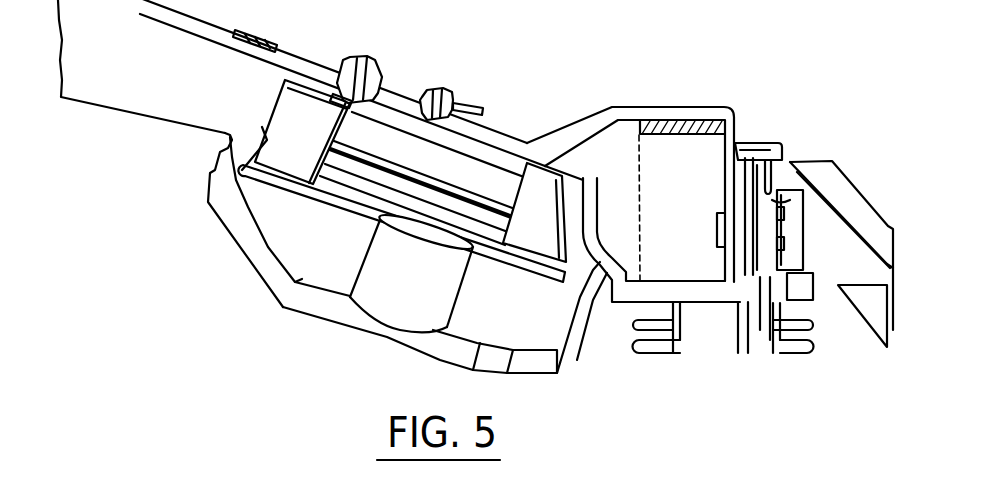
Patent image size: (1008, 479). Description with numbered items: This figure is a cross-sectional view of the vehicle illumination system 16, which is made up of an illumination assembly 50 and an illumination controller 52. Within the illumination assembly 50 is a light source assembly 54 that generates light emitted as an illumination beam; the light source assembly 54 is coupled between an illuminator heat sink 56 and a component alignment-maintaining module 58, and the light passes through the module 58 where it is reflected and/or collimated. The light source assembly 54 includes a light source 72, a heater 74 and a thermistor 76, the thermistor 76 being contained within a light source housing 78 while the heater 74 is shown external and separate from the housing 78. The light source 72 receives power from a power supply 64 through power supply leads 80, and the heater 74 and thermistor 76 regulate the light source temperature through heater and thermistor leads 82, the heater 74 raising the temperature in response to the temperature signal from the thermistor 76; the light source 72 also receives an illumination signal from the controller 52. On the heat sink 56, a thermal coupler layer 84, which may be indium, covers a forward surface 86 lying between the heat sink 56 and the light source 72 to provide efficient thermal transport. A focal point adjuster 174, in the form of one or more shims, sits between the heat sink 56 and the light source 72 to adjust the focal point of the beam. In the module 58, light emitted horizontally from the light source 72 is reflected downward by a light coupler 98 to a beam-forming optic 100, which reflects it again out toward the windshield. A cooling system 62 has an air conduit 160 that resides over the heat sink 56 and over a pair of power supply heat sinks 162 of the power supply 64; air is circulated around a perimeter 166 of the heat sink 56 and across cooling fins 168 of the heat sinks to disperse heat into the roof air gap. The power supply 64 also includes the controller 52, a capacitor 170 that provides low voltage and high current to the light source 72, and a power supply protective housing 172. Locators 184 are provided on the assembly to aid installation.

The illumination system 16 is at (742, 42).
The illumination assembly 50 is at (592, 125).
The illumination controller 52 is at (262, 127).
The light source assembly 54 is at (777, 200).
The illuminator heat sink 56 is at (678, 125).
The component alignment-maintaining module 58 is at (843, 182).
The cooling system 62 is at (401, 84).
The power supply 64 is at (473, 365).
The light source 72 is at (767, 243).
The heater 74 is at (717, 227).
The thermistor 76 is at (763, 270).
The light source housing 78 is at (762, 280).
The power supply leads 80 is at (748, 180).
The heater and thermistor leads 82 is at (770, 340).
The thermal coupler layer 84 is at (760, 266).
The forward surface 86 is at (717, 267).
The light coupler 98 is at (825, 212).
The beam-forming optic 100 is at (887, 350).
The air conduit 160 is at (147, 107).
The power supply heat sinks 162 is at (473, 165).
The perimeter 166 is at (740, 116).
The cooling fins 168 is at (336, 78).
The capacitor 170 is at (373, 243).
The power supply protective housing 172 is at (447, 357).
The focal point adjuster 174 is at (747, 188).
The locators 184 is at (453, 97).